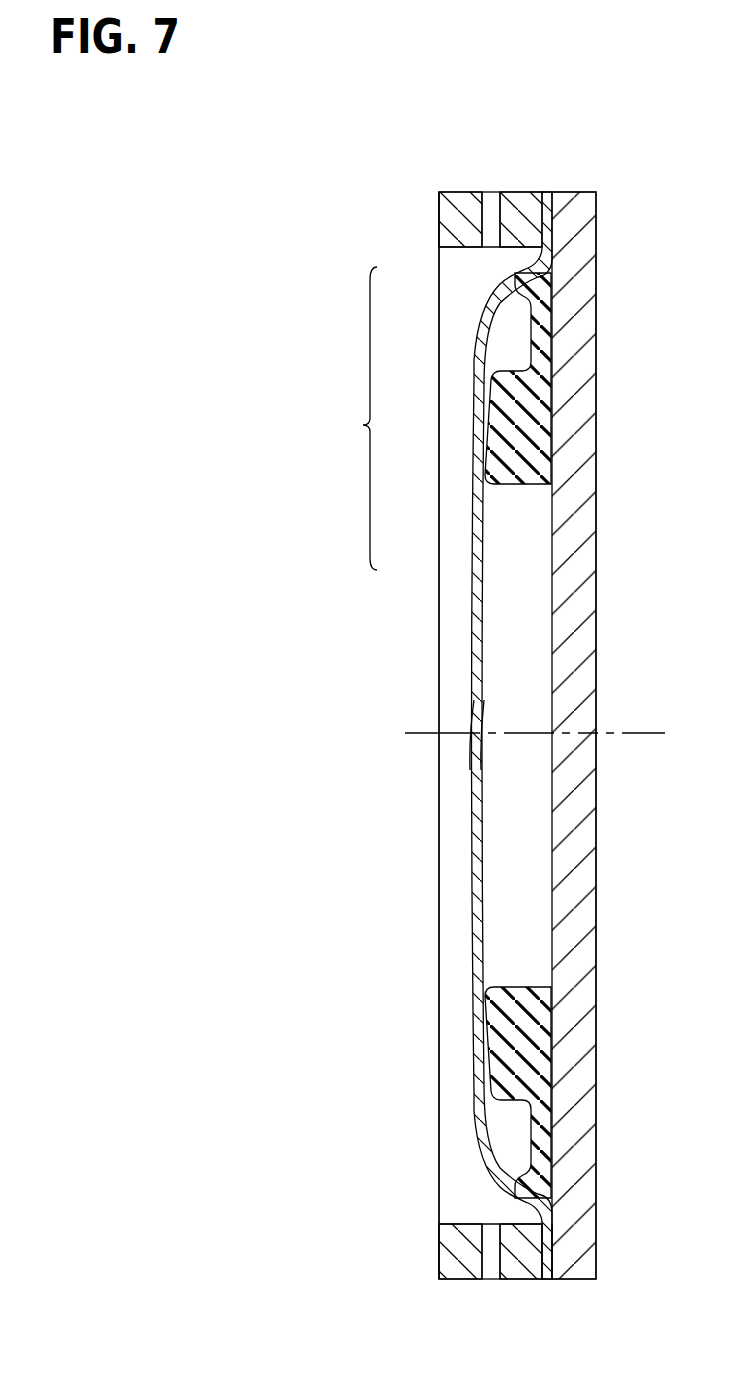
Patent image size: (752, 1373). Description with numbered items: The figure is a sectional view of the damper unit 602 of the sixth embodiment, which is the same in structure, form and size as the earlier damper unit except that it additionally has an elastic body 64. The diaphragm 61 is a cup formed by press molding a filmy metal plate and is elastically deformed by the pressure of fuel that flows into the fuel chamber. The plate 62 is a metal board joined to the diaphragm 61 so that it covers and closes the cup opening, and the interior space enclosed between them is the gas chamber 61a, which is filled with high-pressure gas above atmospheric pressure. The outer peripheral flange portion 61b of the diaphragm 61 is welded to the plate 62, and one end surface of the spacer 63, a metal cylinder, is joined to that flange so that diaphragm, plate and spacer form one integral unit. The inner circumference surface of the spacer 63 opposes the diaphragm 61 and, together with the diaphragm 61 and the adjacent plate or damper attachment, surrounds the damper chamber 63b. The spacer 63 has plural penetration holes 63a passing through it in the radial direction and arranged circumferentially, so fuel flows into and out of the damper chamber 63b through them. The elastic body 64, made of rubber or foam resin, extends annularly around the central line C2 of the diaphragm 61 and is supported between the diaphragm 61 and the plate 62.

The damper unit 602 is at (347, 418).
The diaphragm 61 is at (478, 556).
The gas chamber 61a is at (505, 818).
The flange portion 61b is at (544, 1257).
The plate 62 is at (563, 552).
The spacer 63 is at (463, 252).
The penetration hole 63a is at (488, 192).
The damper chamber 63b is at (450, 920).
The elastic body 64 is at (505, 367).
The central line C2 is at (549, 734).